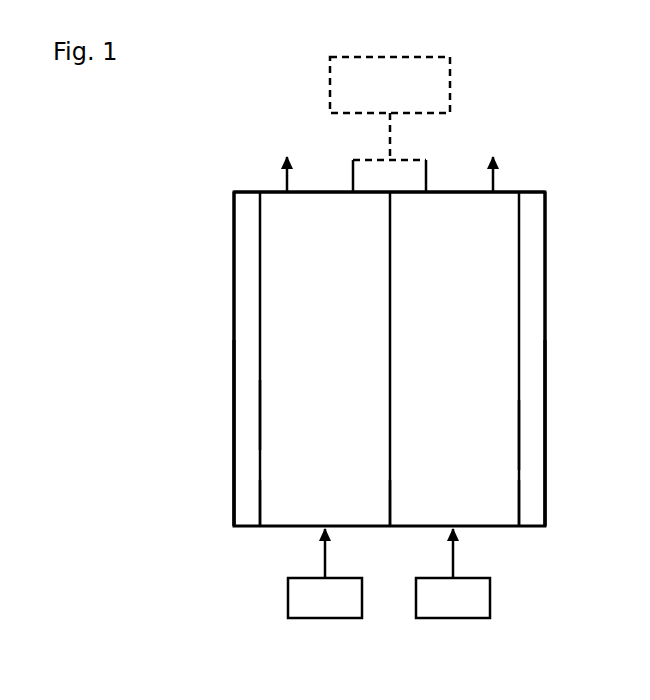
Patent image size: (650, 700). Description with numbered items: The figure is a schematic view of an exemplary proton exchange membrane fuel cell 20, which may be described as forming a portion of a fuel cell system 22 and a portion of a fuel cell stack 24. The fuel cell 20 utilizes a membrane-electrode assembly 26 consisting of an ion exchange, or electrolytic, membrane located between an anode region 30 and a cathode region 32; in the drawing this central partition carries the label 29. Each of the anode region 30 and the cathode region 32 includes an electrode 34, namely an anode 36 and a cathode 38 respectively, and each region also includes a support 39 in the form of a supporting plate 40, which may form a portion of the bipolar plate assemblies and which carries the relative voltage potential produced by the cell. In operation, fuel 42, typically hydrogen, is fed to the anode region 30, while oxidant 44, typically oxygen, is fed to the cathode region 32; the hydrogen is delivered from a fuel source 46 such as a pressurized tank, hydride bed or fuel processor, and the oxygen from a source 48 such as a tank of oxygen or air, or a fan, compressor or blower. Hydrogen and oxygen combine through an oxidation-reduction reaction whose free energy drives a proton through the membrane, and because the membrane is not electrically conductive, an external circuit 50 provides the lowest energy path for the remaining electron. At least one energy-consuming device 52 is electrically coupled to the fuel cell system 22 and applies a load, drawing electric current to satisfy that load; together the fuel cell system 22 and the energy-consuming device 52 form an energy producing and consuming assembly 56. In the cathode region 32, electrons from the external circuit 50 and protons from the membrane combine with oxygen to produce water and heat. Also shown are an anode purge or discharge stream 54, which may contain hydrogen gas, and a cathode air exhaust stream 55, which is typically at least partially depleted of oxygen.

The fuel cell 20 is at (170, 259).
The fuel cell system 22 is at (563, 137).
The fuel cell stack 24 is at (111, 196).
The membrane-electrode assembly 26 is at (388, 532).
The partition wall 29 is at (390, 347).
The anode region 30 is at (257, 415).
The cathode region 32 is at (523, 438).
The electrode 34 is at (336, 500).
The anode 36 is at (285, 503).
The cathode 38 is at (460, 500).
The support 39 is at (232, 272).
The supporting plate 40 is at (234, 345).
The fuel 42 is at (322, 570).
The oxidant 44 is at (450, 570).
The fuel source 46 is at (322, 618).
The oxygen source 48 is at (450, 618).
The external circuit 50 is at (375, 160).
The energy-consuming device 52 is at (452, 85).
The anode purge or discharge stream 54 is at (283, 185).
The cathode air exhaust stream 55 is at (496, 185).
The energy producing and consuming assembly 56 is at (199, 118).